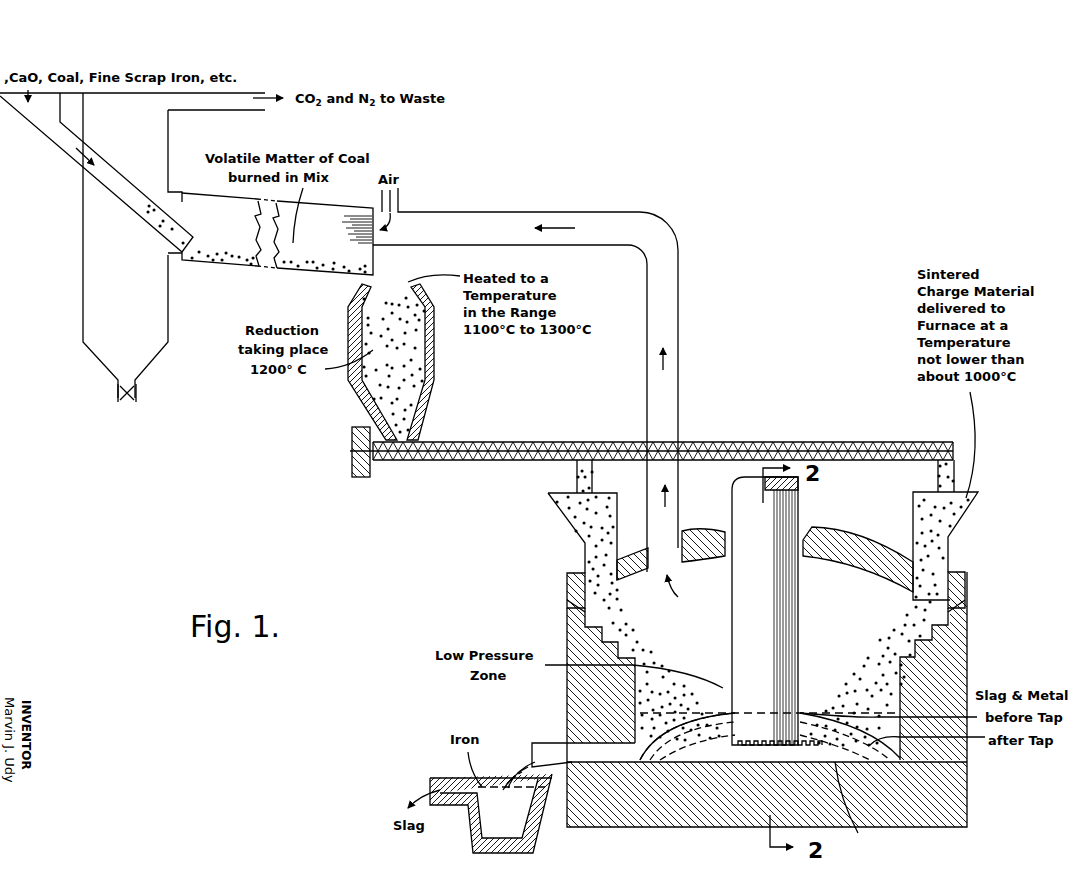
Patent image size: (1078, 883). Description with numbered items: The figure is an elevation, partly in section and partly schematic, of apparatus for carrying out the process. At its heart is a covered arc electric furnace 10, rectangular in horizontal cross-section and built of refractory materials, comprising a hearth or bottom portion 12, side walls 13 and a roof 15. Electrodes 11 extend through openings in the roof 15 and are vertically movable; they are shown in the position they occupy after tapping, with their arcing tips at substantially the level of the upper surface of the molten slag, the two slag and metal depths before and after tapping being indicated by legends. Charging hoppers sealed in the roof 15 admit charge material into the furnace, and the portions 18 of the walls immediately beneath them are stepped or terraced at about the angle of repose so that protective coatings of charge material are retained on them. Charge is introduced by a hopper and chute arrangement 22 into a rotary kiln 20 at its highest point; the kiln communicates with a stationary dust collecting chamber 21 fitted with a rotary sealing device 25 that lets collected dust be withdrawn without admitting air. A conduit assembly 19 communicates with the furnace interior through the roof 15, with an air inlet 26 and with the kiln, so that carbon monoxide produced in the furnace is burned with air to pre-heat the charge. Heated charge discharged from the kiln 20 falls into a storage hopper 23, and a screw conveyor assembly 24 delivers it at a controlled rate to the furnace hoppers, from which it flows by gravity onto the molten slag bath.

The electric furnace 10 is at (967, 662).
The electrodes 11 is at (800, 512).
The hearth or bottom portion 12 is at (716, 783).
The side walls 13 is at (950, 690).
The roof 15 is at (862, 533).
The portions of the side and end walls 18 is at (938, 633).
The conduit assembly 19 is at (680, 385).
The rotary kiln 20 is at (228, 264).
The dust collecting chamber 21 is at (83, 290).
The hopper and chute or conduit arrangement 22 is at (62, 148).
The storage hopper or chamber 23 is at (434, 368).
The screw conveyor assembly 24 is at (857, 442).
The rotary sealing device 25 is at (117, 395).
The air inlet 26 is at (402, 194).